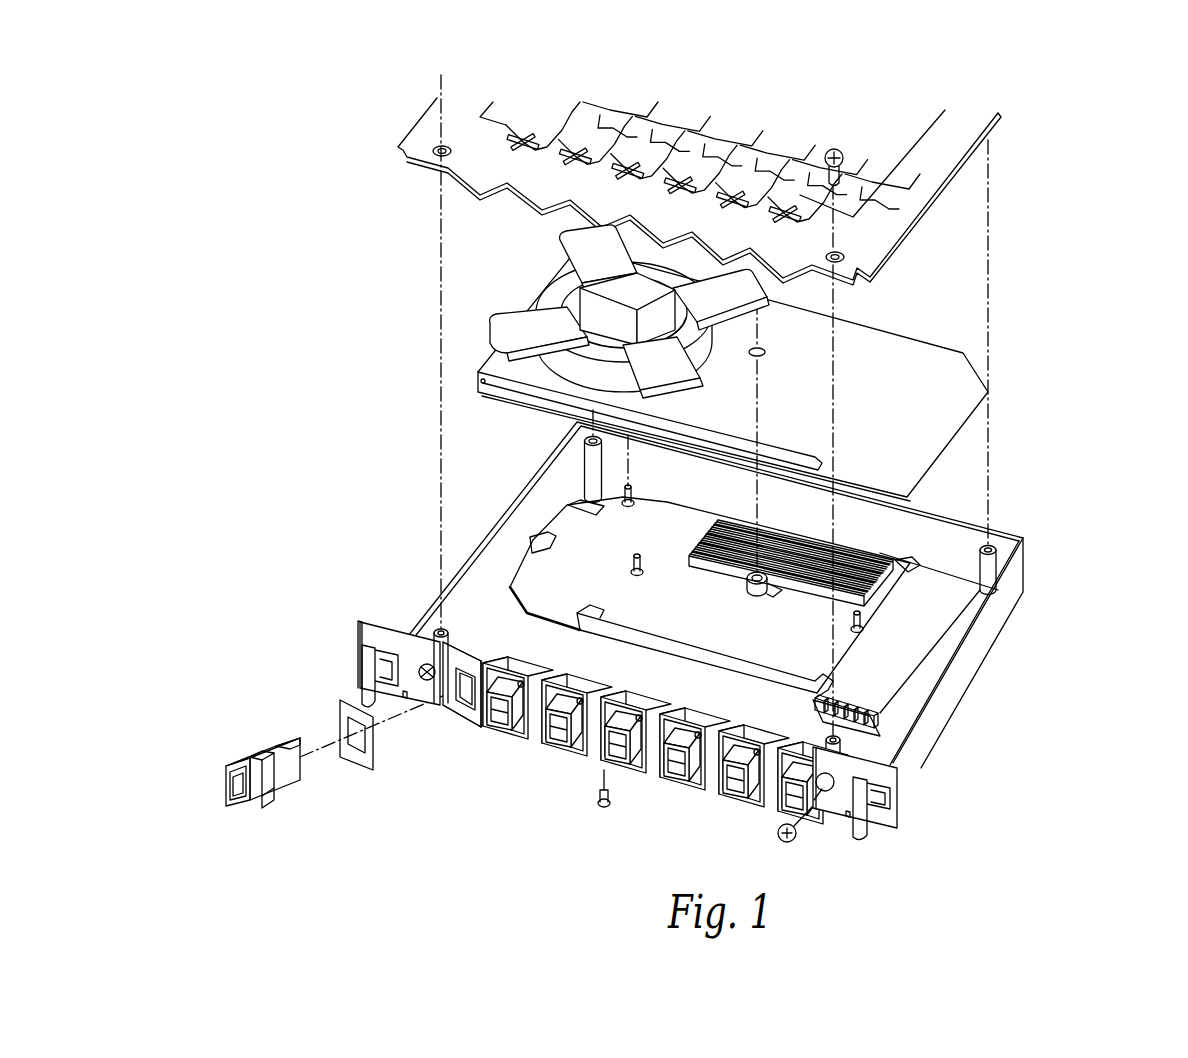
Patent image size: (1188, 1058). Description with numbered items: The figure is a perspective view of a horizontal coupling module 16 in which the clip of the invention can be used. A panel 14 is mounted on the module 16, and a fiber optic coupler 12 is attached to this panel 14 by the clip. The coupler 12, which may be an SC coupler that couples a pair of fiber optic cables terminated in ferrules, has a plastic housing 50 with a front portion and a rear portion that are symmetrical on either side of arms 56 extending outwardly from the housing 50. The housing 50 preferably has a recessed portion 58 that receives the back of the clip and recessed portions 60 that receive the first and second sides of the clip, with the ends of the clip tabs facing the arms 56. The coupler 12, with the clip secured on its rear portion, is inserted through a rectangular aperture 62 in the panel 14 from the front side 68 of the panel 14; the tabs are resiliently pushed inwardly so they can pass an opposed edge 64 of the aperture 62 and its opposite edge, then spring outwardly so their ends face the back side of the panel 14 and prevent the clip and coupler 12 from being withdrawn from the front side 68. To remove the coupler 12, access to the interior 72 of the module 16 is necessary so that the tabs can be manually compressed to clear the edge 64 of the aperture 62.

The fiber optic coupler 12 is at (255, 767).
The panel 14 is at (627, 705).
The horizontal coupling module 16 is at (1090, 509).
The housing 50 is at (248, 762).
The arms 56 is at (268, 746).
The recessed portion 58 is at (286, 777).
The recessed portions 60 is at (280, 748).
The aperture 62 is at (444, 642).
The opposed edge 64 is at (456, 717).
The front side 68 is at (478, 715).
The interior 72 is at (658, 697).